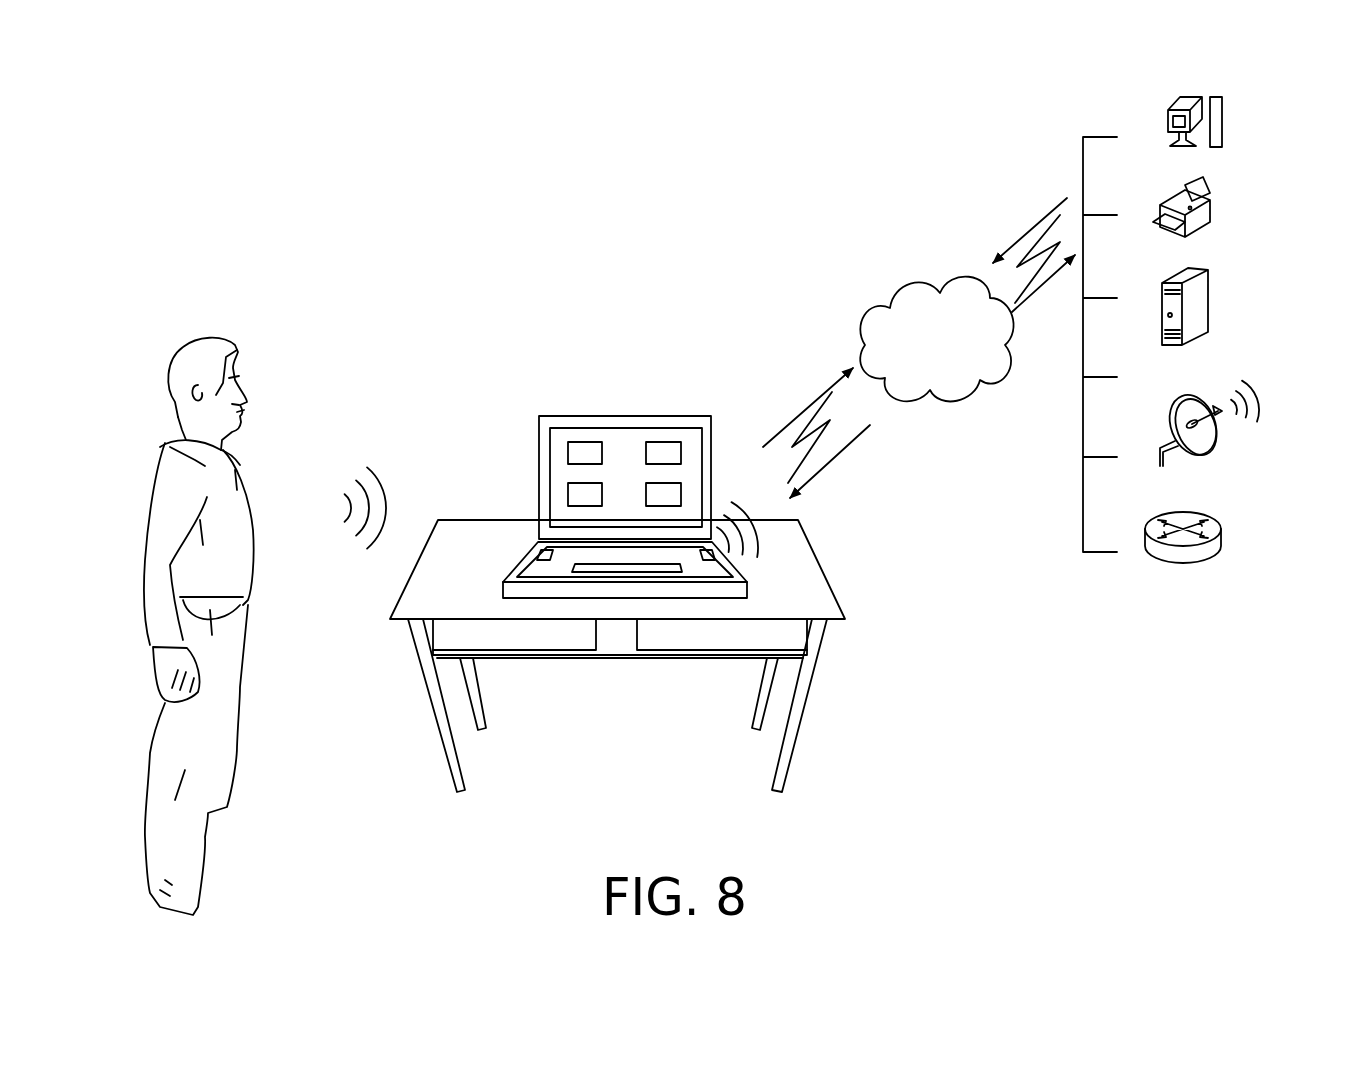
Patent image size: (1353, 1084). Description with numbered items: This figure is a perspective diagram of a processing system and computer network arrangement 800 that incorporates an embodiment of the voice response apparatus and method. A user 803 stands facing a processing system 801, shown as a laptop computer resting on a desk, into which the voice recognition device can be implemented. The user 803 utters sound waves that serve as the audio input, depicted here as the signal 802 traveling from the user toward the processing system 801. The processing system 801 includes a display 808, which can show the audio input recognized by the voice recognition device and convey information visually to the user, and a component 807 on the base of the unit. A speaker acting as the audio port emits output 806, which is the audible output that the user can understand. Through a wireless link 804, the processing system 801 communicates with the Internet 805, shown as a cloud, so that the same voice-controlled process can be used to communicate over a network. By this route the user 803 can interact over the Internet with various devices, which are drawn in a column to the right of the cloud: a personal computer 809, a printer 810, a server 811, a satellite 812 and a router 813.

The system environment 800 is at (390, 133).
The processing system 801 is at (615, 408).
The wireless signal from user 802 is at (359, 522).
The user 803 is at (213, 318).
The wireless link to internet 804 is at (819, 433).
The internet 805 is at (936, 356).
The output 806 is at (757, 539).
The sensor 807 is at (538, 552).
The display 808 is at (565, 457).
The personal computer 809 is at (1168, 134).
The printer 810 is at (1167, 221).
The server 811 is at (1167, 318).
The satellite 812 is at (1185, 436).
The router 813 is at (1162, 554).